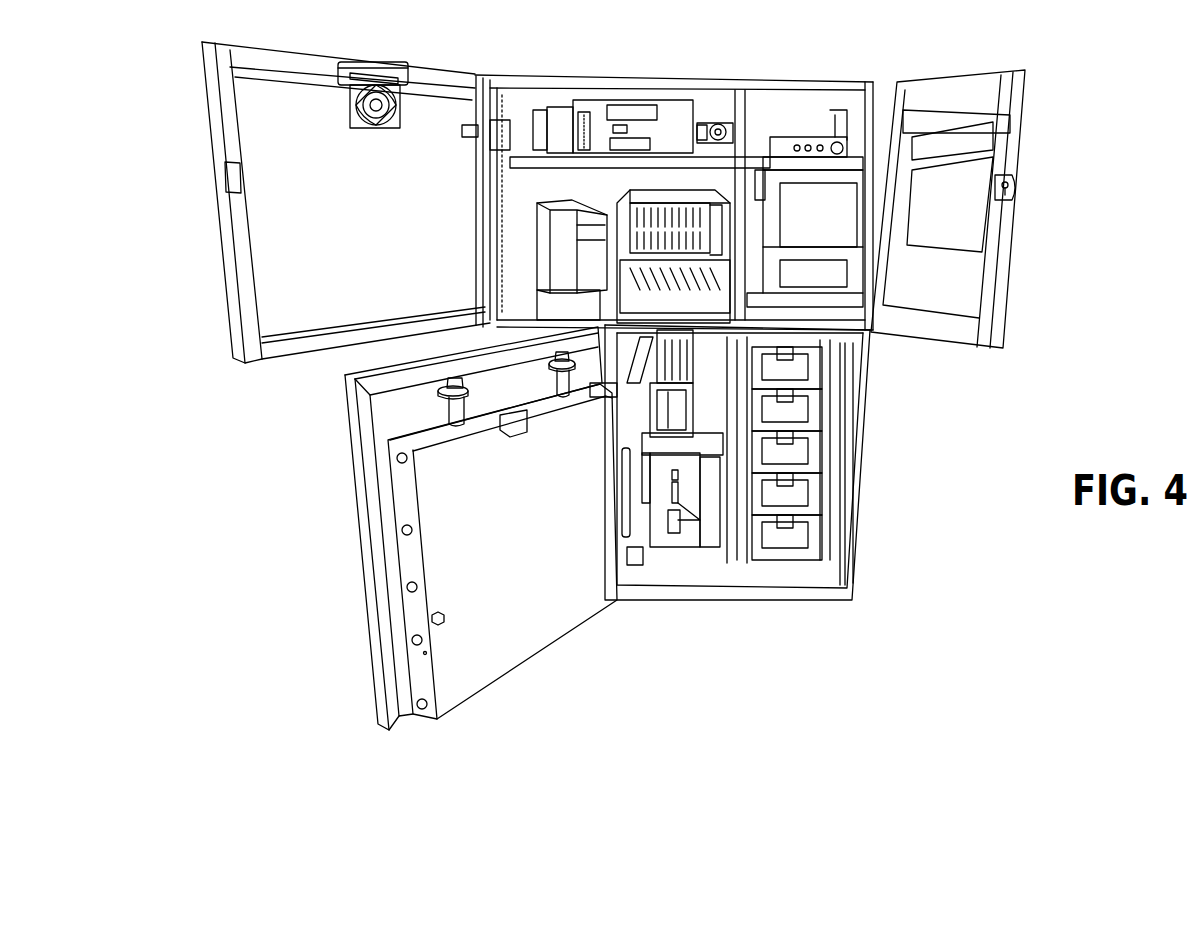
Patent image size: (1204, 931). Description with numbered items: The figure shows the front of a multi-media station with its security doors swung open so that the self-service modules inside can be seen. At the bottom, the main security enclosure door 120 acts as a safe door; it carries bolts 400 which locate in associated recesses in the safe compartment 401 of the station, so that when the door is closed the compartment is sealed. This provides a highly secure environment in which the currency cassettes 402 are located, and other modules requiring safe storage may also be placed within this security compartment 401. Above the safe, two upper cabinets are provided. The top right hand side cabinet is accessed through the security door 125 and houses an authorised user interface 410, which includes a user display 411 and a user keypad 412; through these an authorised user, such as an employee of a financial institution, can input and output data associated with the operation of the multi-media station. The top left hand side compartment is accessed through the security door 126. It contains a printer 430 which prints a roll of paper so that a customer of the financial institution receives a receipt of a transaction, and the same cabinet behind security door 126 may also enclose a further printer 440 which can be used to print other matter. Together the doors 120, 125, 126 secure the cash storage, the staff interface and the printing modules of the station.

The main security enclosure door 120 is at (372, 668).
The security door 125 is at (1022, 128).
The security door 126 is at (228, 265).
The bolts 400 is at (423, 709).
The safe compartment 401 is at (792, 568).
The currency cassettes 402 is at (808, 503).
The authorised user interface 410 is at (825, 248).
The user display 411 is at (843, 207).
The user keypad 412 is at (802, 140).
The printer 430 is at (673, 207).
The further printer 440 is at (553, 223).